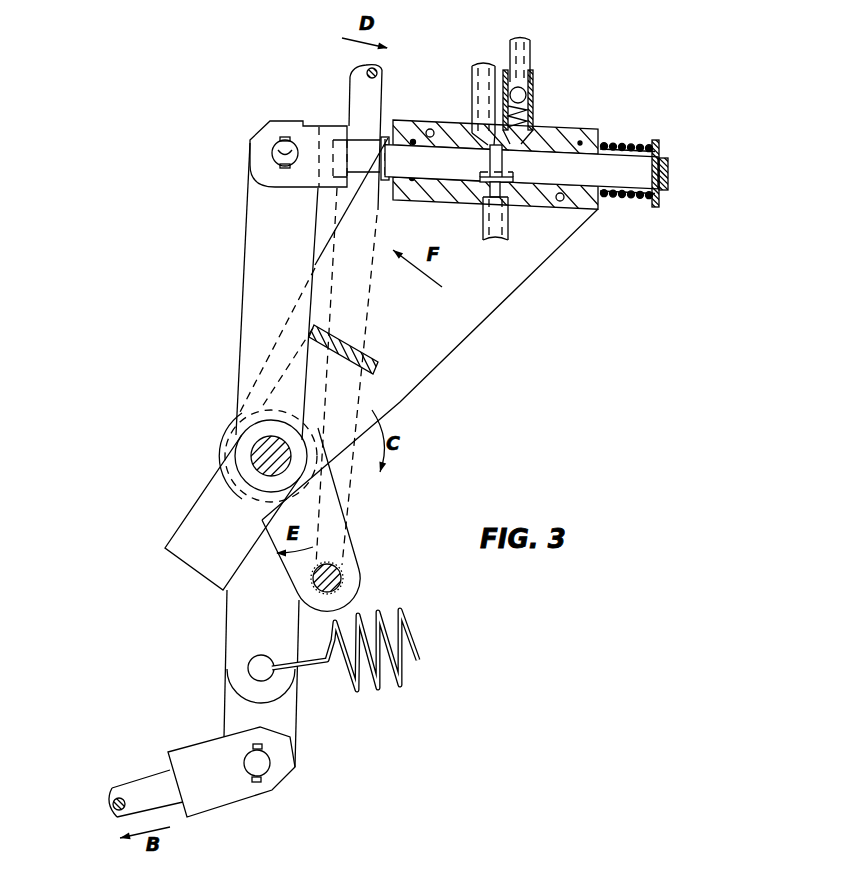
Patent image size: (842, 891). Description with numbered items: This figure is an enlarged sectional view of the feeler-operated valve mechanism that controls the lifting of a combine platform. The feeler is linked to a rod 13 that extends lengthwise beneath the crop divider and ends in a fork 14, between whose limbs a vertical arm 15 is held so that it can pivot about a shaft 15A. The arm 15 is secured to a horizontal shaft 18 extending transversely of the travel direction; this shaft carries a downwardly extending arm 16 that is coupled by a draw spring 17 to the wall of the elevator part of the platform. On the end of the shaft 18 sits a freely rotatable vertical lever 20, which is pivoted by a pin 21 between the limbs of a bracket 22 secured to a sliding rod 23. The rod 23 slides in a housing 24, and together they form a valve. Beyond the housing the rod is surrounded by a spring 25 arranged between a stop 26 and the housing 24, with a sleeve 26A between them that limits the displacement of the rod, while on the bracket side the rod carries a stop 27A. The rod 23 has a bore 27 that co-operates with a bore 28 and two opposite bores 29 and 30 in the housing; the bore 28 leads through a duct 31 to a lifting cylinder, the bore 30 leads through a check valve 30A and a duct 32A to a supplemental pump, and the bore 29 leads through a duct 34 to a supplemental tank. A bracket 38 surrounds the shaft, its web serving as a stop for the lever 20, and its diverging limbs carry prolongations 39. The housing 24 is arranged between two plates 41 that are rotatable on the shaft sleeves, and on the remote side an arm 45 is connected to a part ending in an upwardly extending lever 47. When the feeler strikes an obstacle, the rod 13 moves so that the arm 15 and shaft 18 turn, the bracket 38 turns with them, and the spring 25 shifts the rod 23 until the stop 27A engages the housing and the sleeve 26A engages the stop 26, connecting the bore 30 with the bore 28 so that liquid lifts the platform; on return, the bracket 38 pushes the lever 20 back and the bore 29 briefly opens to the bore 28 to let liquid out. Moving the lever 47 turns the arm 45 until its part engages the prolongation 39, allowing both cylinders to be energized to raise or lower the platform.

The rod 13 is at (148, 782).
The fork 14 is at (241, 793).
The vertical arm 15 is at (226, 700).
The shaft 15A is at (290, 769).
The arm 16 is at (238, 622).
The draw spring 17 is at (418, 620).
The shaft 18 is at (266, 471).
The lever 20 is at (250, 209).
The pin 21 is at (281, 133).
The bracket 22 is at (327, 133).
The sliding rod 23 is at (376, 150).
The housing 24 is at (572, 128).
The spring 25 is at (610, 142).
The stop 26 is at (667, 147).
The sleeve 26A is at (642, 200).
The bore 27 is at (508, 178).
The stop 27A is at (386, 130).
The bore 28 is at (477, 197).
The bore 29 is at (486, 148).
The bore 30 is at (518, 155).
The check valve 30A is at (534, 92).
The duct 31 is at (509, 222).
The duct 32A is at (522, 50).
The duct 34 is at (478, 88).
The bracket 38 is at (366, 394).
The prolongation 39 is at (197, 562).
The plate 41 is at (523, 273).
The arm 45 is at (347, 571).
The lever 47 is at (354, 80).